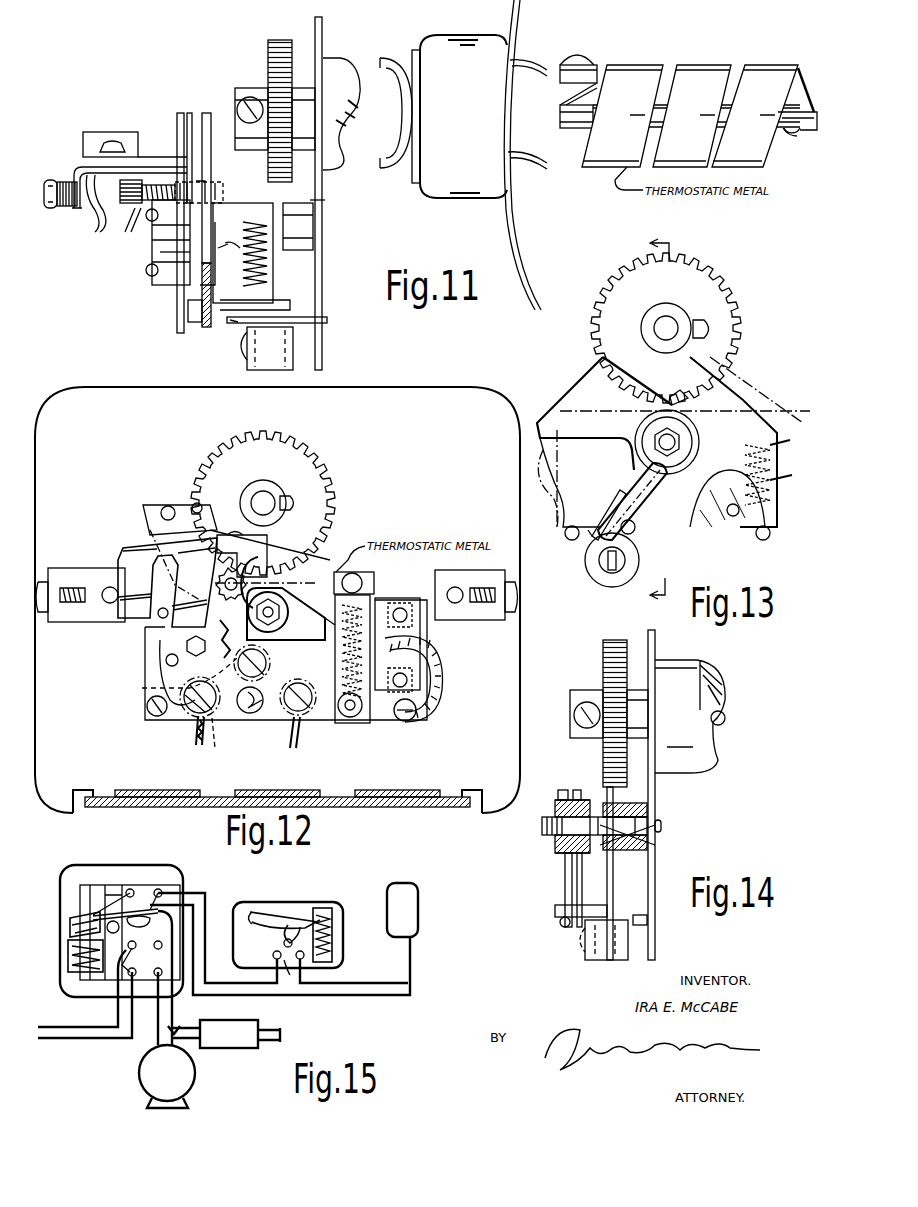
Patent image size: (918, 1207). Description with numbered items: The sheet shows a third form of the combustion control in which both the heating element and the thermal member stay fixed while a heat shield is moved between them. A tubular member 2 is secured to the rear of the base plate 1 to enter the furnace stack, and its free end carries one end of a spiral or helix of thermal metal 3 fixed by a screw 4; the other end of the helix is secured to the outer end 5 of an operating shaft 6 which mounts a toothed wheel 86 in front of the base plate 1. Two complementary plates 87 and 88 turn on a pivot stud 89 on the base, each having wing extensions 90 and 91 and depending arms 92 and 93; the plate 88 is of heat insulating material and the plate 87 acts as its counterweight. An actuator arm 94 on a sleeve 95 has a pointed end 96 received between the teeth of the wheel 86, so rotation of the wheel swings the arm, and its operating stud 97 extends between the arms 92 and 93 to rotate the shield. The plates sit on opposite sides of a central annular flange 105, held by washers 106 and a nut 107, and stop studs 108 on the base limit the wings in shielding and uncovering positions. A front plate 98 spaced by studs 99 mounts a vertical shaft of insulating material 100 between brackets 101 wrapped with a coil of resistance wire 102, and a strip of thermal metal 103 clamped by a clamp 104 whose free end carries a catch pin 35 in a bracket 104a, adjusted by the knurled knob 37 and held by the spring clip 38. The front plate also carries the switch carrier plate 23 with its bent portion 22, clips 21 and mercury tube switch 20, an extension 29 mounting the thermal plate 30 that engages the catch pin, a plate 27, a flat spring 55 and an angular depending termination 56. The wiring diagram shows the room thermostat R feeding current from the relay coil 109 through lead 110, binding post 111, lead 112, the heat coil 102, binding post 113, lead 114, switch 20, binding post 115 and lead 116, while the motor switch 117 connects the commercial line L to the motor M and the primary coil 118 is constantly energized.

In FIG. 11, the base plate 1 is at (323, 42).
In FIG. 12, the base plate 1 is at (480, 808).
In FIG. 14, the base plate 1 is at (660, 880).
In FIG. 11, the tubular member 2 is at (350, 70).
In FIG. 14, the tubular member 2 is at (712, 755).
In FIG. 11, the spiral or helix of thermal metal 3 is at (650, 65).
In FIG. 11, the screw 4 is at (592, 60).
In FIG. 11, the outer end of operating shaft 5 is at (806, 133).
In FIG. 11, the operating shaft 6 is at (388, 150).
In FIG. 14, the operating shaft 6 is at (727, 717).
In FIG. 12, the mercury tube switch 20 is at (277, 595).
In FIG. 15, the mercury tube switch 20 is at (245, 918).
In FIG. 11, the clips 21 is at (92, 220).
In FIG. 12, the clips 21 is at (133, 545).
In FIG. 11, the bent portion of carrier plate 22 is at (148, 156).
In FIG. 11, the carrier plate 23 is at (162, 238).
In FIG. 11, the plate 27 is at (165, 262).
In FIG. 12, the plate 27 is at (158, 632).
In FIG. 11, the extension of carrier plate 29 is at (177, 125).
In FIG. 12, the extension of carrier plate 29 is at (180, 500).
In FIG. 11, the plate of thermal metal 30 is at (187, 115).
In FIG. 12, the plate of thermal metal 30 is at (314, 569).
In FIG. 11, the catch pin 35 is at (208, 186).
In FIG. 12, the catch pin 35 is at (380, 572).
In FIG. 11, the knurled knob 37 is at (120, 196).
In FIG. 11, the spring clip 38 is at (130, 212).
In FIG. 12, the flat spring 55 is at (142, 684).
In FIG. 11, the angular depending termination 56 is at (70, 215).
In FIG. 11, the toothed wheel 86 is at (283, 40).
In FIG. 13, the toothed wheel 86 is at (715, 280).
In FIG. 12, the toothed wheel 86 is at (328, 476).
In FIG. 14, the toothed wheel 86 is at (620, 640).
In FIG. 13, the complementary plate 87 is at (556, 478).
In FIG. 14, the complementary plate 87 is at (580, 790).
In FIG. 13, the shield plate 88 is at (775, 410).
In FIG. 12, the shield plate 88 is at (300, 583).
In FIG. 14, the shield plate 88 is at (562, 790).
In FIG. 13, the pivot stud 89 is at (640, 420).
In FIG. 14, the pivot stud 89 is at (542, 828).
In FIG. 13, the wing extension 90 is at (777, 530).
In FIG. 13, the wing extension 91 is at (555, 400).
In FIG. 13, the depending arm 92 is at (640, 548).
In FIG. 14, the depending arm 92 is at (565, 877).
In FIG. 13, the depending arm 93 is at (604, 522).
In FIG. 14, the depending arm 93 is at (577, 892).
In FIG. 14, the actuator arm 94 is at (613, 895).
In FIG. 11, the sleeve 95 is at (315, 245).
In FIG. 14, the sleeve 95 is at (640, 803).
In FIG. 11, the pointed end 96 is at (322, 200).
In FIG. 13, the pointed end 96 is at (698, 412).
In FIG. 11, the operating stud 97 is at (280, 312).
In FIG. 13, the operating stud 97 is at (616, 508).
In FIG. 14, the operating stud 97 is at (555, 910).
In FIG. 11, the front plate 98 is at (206, 113).
In FIG. 12, the front plate 98 is at (150, 664).
In FIG. 11, the studs 99 is at (240, 112).
In FIG. 12, the studs 99 is at (400, 722).
In FIG. 14, the studs 99 is at (609, 714).
In FIG. 11, the vertical shaft of insulating material 100 is at (270, 262).
In FIG. 11, the brackets 101 is at (243, 205).
In FIG. 12, the brackets 101 is at (428, 600).
In FIG. 11, the coil of resistance wire 102 is at (270, 284).
In FIG. 13, the coil of resistance wire 102 is at (746, 530).
In FIG. 12, the coil of resistance wire 102 is at (330, 655).
In FIG. 15, the coil of resistance wire 102 is at (335, 940).
In FIG. 11, the strip of thermal metal 103 is at (180, 275).
In FIG. 12, the strip of thermal metal 103 is at (372, 596).
In FIG. 11, the clamp 104 is at (195, 322).
In FIG. 12, the clamp 104 is at (340, 722).
In FIG. 11, the bracket 104a is at (215, 180).
In FIG. 12, the bracket 104a is at (314, 615).
In FIG. 14, the central annular flange 105 is at (575, 800).
In FIG. 14, the washers 106 is at (560, 800).
In FIG. 14, the nut 107 is at (552, 848).
In FIG. 11, the stop studs 108 is at (315, 322).
In FIG. 13, the stop studs 108 is at (568, 540).
In FIG. 14, the stop studs 108 is at (560, 925).
In FIG. 15, the relay coil 109 is at (70, 930).
In FIG. 15, the lead 110 is at (380, 996).
In FIG. 12, the binding post 111 is at (312, 722).
In FIG. 15, the binding post 111 is at (302, 962).
In FIG. 12, the lead 112 is at (432, 662).
In FIG. 15, the lead 112 is at (286, 975).
In FIG. 12, the binding post 113 is at (248, 681).
In FIG. 15, the binding post 113 is at (283, 940).
In FIG. 15, the lead 114 is at (306, 915).
In FIG. 12, the binding post 115 is at (222, 737).
In FIG. 15, the binding post 115 is at (272, 955).
In FIG. 12, the lead 116 is at (193, 741).
In FIG. 15, the lead 116 is at (235, 984).
In FIG. 15, the motor switch 117 is at (143, 917).
In FIG. 15, the primary coil 118 is at (68, 960).
In FIG. 15, the room thermostat R is at (418, 918).
In FIG. 15, the motor M is at (192, 1072).
In FIG. 15, the line L is at (55, 1025).